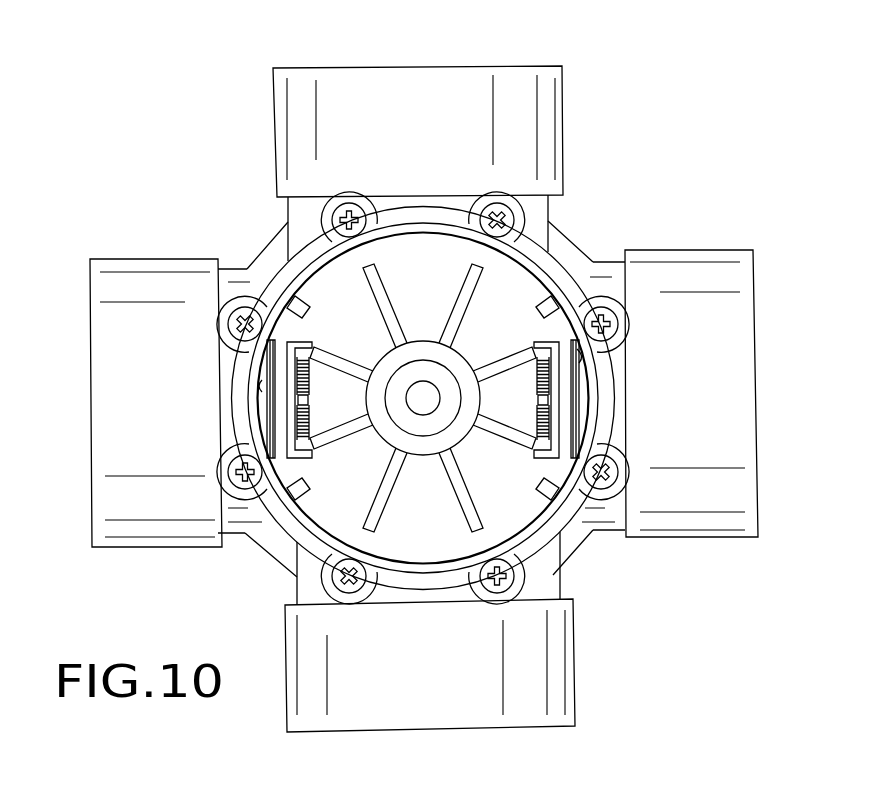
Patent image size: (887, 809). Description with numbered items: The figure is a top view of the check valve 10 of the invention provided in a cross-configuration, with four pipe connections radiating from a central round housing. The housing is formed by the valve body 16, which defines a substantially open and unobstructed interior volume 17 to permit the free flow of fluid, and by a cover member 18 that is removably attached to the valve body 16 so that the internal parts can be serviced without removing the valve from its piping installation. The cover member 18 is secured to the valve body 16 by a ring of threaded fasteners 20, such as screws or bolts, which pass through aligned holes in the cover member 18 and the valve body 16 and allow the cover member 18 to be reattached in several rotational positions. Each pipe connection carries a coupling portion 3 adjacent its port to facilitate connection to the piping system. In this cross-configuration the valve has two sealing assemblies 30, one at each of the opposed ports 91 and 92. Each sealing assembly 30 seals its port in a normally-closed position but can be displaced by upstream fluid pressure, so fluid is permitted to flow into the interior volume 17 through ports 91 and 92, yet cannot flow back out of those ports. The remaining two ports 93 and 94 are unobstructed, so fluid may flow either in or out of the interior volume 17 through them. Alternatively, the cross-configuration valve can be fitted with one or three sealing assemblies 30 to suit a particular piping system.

The check valve 10 is at (661, 172).
The inlet coupling portion 3 is at (112, 268).
The valve body 16 is at (288, 222).
The interior volume 17 is at (322, 290).
The cover member 18 is at (508, 296).
The threaded fastener 20 is at (337, 577).
The sealing assembly 30 is at (293, 425).
The port 91 is at (262, 386).
The port 92 is at (577, 353).
The port 93 is at (450, 571).
The port 94 is at (420, 227).